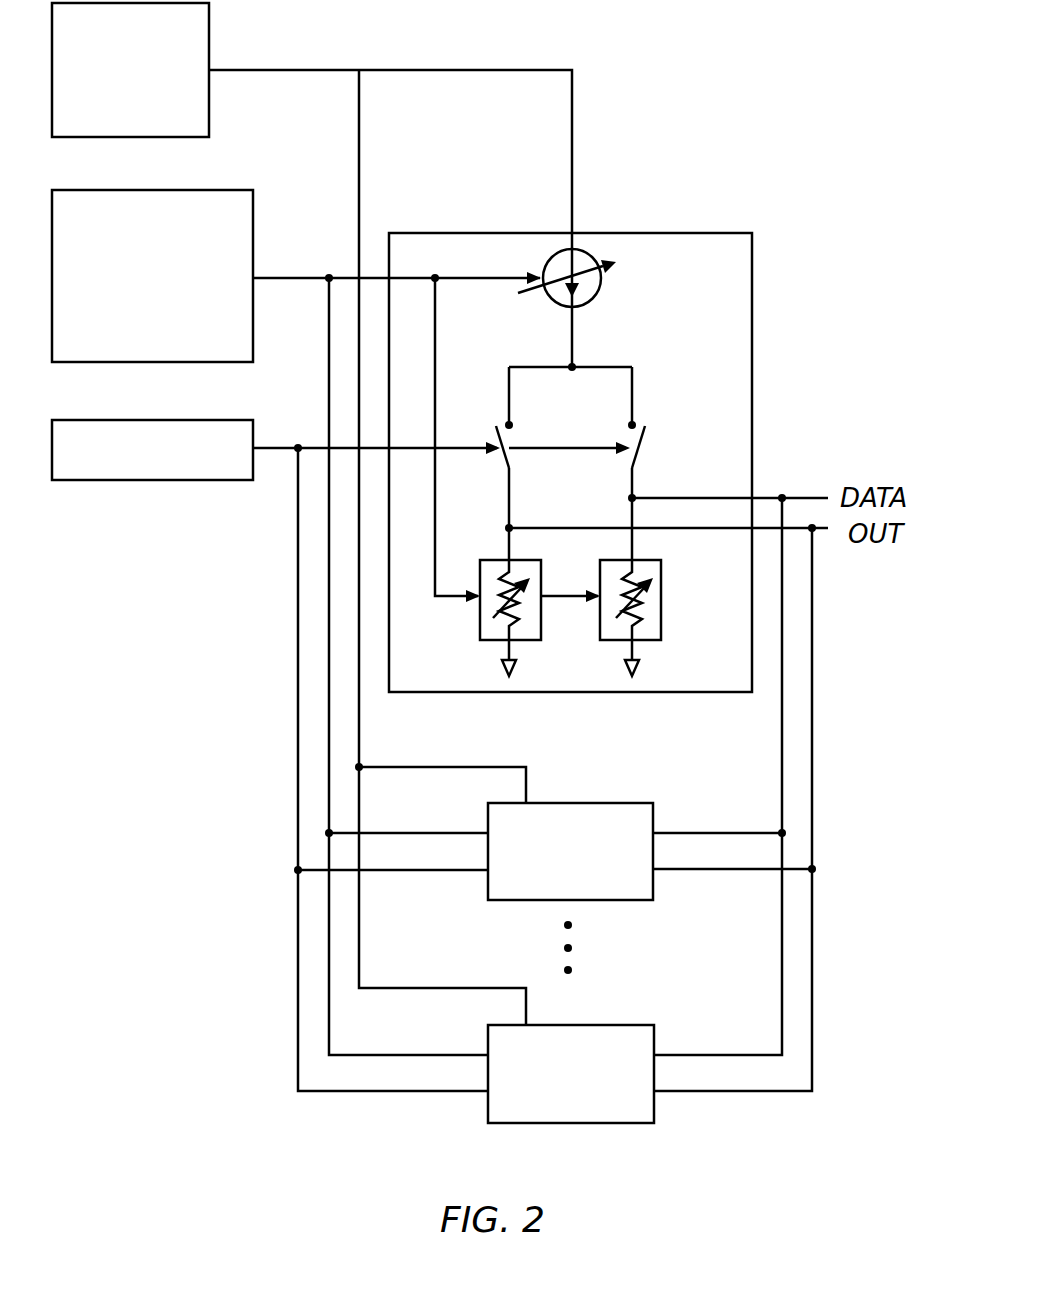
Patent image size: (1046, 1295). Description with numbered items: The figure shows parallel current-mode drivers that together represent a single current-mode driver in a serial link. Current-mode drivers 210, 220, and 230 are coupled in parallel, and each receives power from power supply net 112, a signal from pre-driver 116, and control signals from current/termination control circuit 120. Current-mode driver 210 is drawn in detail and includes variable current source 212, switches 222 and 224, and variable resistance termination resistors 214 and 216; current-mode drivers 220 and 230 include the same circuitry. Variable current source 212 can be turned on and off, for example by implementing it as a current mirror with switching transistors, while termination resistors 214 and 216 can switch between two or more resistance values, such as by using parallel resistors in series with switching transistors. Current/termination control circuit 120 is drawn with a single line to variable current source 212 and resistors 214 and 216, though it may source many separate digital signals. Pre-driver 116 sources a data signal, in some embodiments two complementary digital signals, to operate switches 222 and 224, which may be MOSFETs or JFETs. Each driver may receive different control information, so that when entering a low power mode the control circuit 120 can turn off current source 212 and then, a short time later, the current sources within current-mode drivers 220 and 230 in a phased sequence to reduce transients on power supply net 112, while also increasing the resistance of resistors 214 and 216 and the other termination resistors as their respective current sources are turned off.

The power supply net 112 is at (209, 114).
The current/termination control circuit 120 is at (253, 209).
The pre-driver 116 is at (127, 480).
The current-mode driver 210 is at (752, 344).
The variable current source 212 is at (553, 308).
The switch 222 is at (509, 462).
The switch 224 is at (636, 458).
The variable resistance termination resistor 214 is at (480, 636).
The variable resistance termination resistor 216 is at (661, 636).
The current-mode driver 220 is at (633, 803).
The current-mode driver 230 is at (633, 1025).